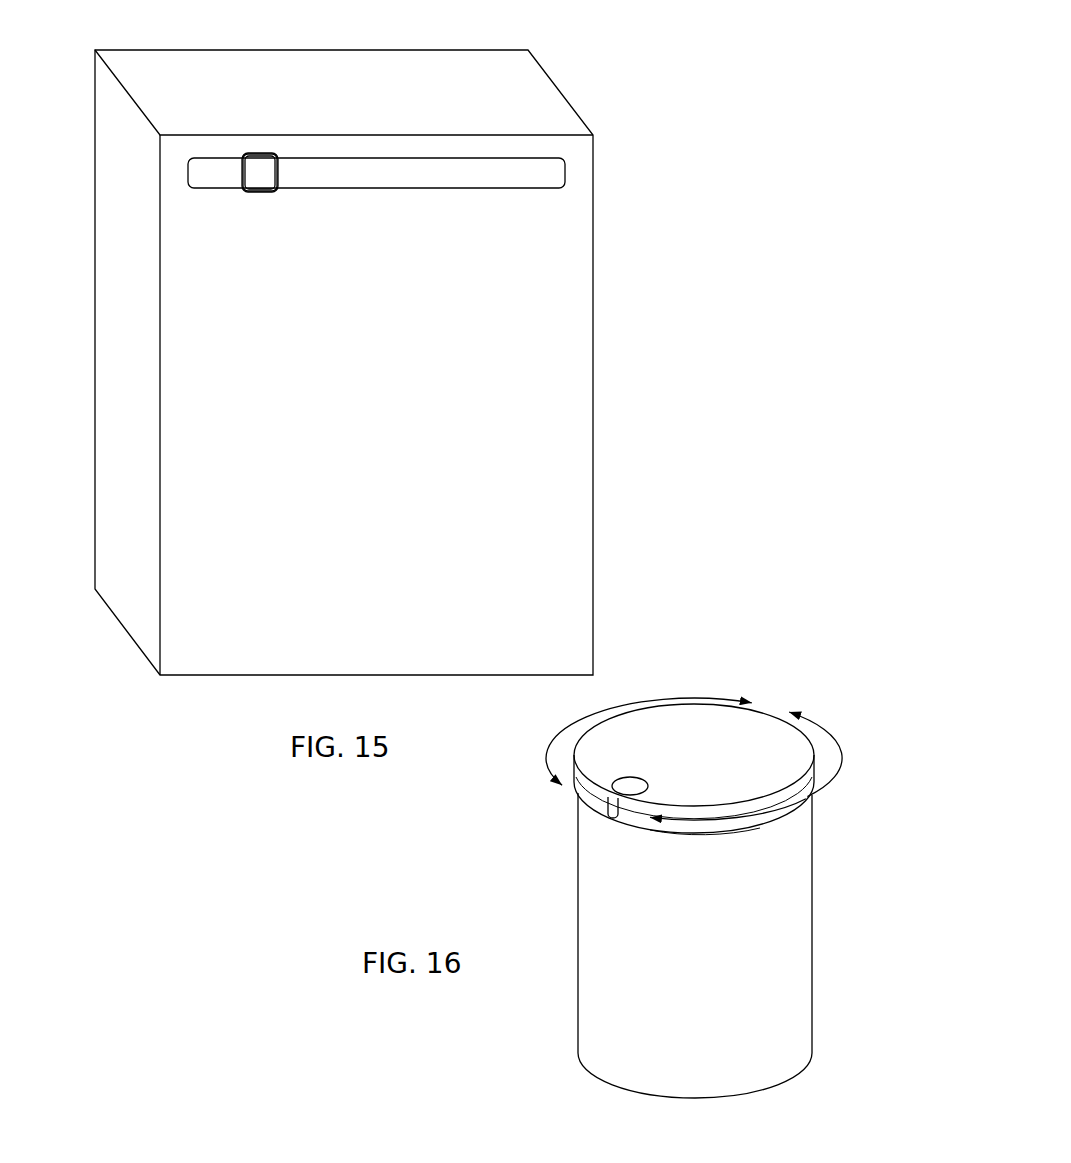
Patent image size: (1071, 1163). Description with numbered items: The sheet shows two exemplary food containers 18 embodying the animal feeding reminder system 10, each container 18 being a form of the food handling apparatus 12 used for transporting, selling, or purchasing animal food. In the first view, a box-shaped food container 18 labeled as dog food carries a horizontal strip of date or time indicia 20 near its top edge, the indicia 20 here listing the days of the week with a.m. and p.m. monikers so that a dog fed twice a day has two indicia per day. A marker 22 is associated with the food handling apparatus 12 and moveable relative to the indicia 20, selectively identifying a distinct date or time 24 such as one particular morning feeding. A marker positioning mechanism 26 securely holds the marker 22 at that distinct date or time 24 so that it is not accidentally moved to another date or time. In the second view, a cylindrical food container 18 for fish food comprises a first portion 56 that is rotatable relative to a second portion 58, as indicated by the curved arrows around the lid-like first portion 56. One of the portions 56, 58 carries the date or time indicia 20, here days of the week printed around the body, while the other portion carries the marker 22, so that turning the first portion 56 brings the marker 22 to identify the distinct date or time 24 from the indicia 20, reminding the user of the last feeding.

In FIG. 15, the animal feeding reminder system 10 is at (402, 351).
In FIG. 16, the animal feeding reminder system 10 is at (682, 842).
In FIG. 15, the food handling apparatus 12 is at (402, 351).
In FIG. 16, the food handling apparatus 12 is at (682, 842).
In FIG. 15, the food container 18 is at (637, 91).
In FIG. 16, the food container 18 is at (682, 842).
In FIG. 15, the date or time indicia 20 is at (382, 177).
In FIG. 16, the date or time indicia 20 is at (787, 842).
In FIG. 15, the marker 22 is at (258, 157).
In FIG. 16, the marker 22 is at (613, 807).
In FIG. 15, the distinct date or time 24 is at (247, 170).
In FIG. 16, the distinct date or time 24 is at (608, 848).
In FIG. 15, the marker positioning mechanism 26 is at (299, 99).
In FIG. 16, the marker positioning mechanism 26 is at (733, 828).
In FIG. 16, the first portion 56 is at (730, 742).
In FIG. 16, the second portion 58 is at (598, 995).